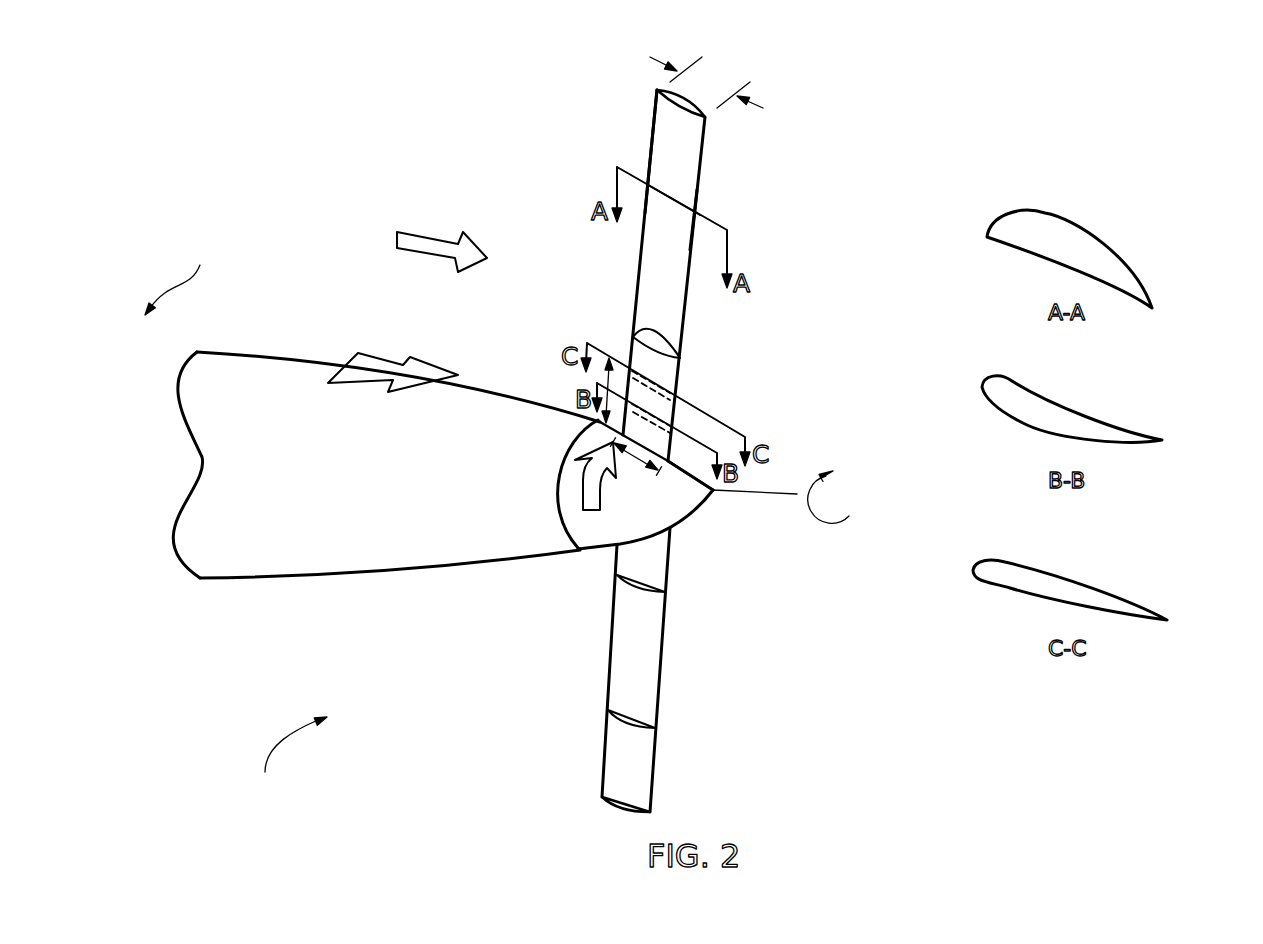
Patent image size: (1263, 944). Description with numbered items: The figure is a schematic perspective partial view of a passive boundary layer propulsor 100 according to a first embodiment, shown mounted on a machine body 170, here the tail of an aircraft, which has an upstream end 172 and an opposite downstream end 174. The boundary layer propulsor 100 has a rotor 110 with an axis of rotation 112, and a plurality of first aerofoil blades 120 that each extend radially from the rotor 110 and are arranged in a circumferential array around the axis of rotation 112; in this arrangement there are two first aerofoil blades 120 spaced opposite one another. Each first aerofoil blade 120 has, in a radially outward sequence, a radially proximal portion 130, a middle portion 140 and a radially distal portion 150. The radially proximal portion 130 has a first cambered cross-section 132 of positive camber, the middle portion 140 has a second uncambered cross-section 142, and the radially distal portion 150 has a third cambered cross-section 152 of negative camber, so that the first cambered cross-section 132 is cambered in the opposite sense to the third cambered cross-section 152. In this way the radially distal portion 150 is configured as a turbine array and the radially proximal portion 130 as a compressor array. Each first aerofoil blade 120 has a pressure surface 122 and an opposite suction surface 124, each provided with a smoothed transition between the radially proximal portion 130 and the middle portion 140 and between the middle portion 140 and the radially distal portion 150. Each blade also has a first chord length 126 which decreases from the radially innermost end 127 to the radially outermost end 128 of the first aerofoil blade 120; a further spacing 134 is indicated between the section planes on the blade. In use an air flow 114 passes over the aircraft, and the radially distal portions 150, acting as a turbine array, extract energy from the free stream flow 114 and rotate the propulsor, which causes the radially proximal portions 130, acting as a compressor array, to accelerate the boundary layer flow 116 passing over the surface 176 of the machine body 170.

The boundary layer propulsor 100 is at (284, 760).
The rotor 110 is at (580, 563).
The axis of rotation 112 is at (808, 508).
The air flow 114 is at (430, 232).
The boundary layer flow 116 is at (433, 363).
The first aerofoil blade 120 is at (700, 167).
The pressure surface 122 is at (653, 243).
The suction surface 124 is at (682, 197).
The first chord length 126 is at (764, 105).
The radially innermost end 127 is at (697, 497).
The radially outermost end 128 is at (700, 100).
The radially proximal portion 130 is at (675, 423).
The first cambered cross-section 132 is at (1112, 432).
The distance 134 is at (599, 378).
The middle portion 140 is at (677, 393).
The second uncambered cross-section 142 is at (1133, 602).
The radially distal portion 150 is at (698, 208).
The third cambered cross-section 152 is at (1133, 267).
The machine body 170 is at (283, 548).
The upstream end 172 is at (186, 277).
The downstream end 174 is at (676, 466).
The surface 176 is at (418, 570).